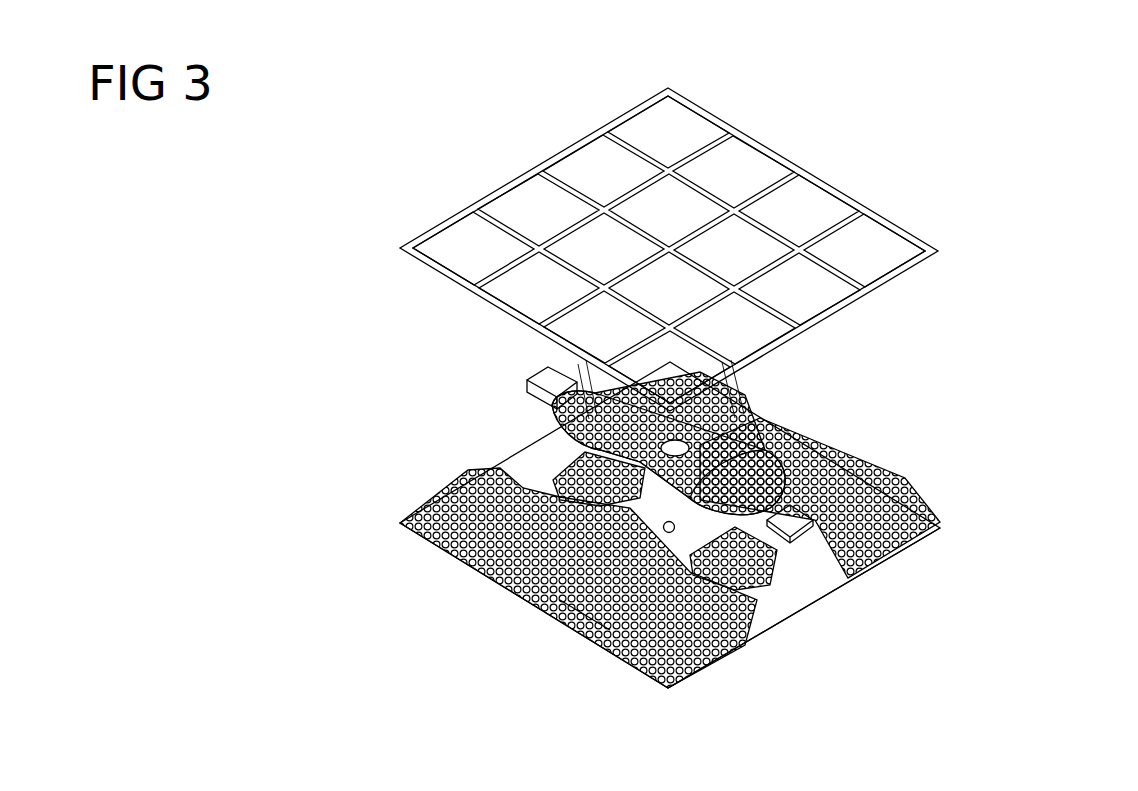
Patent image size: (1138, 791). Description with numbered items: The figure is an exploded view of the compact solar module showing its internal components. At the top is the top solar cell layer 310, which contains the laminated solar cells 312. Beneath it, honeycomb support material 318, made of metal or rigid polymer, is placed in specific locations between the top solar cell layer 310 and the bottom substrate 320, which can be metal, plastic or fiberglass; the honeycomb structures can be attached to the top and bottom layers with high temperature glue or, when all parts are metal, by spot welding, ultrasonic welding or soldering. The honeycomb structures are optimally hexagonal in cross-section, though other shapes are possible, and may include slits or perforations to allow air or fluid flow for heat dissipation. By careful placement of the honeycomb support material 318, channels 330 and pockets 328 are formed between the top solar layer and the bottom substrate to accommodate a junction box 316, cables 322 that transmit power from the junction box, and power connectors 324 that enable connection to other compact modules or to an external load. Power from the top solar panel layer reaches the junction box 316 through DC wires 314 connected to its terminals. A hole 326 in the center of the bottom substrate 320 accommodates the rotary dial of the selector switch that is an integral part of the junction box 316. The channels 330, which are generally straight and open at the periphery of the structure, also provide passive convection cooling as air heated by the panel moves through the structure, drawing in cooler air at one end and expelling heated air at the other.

The top solar cell layer 310 is at (852, 195).
The laminated solar cells 312 is at (723, 170).
The DC wires 314 is at (750, 403).
The junction box 316 is at (790, 432).
The honeycomb support material 318 is at (923, 502).
The bottom substrate 320 is at (790, 612).
The cables 322 is at (560, 497).
The power connectors 324 is at (550, 368).
The hole 326 is at (664, 534).
The pockets 328 is at (577, 627).
The channels 330 is at (620, 652).